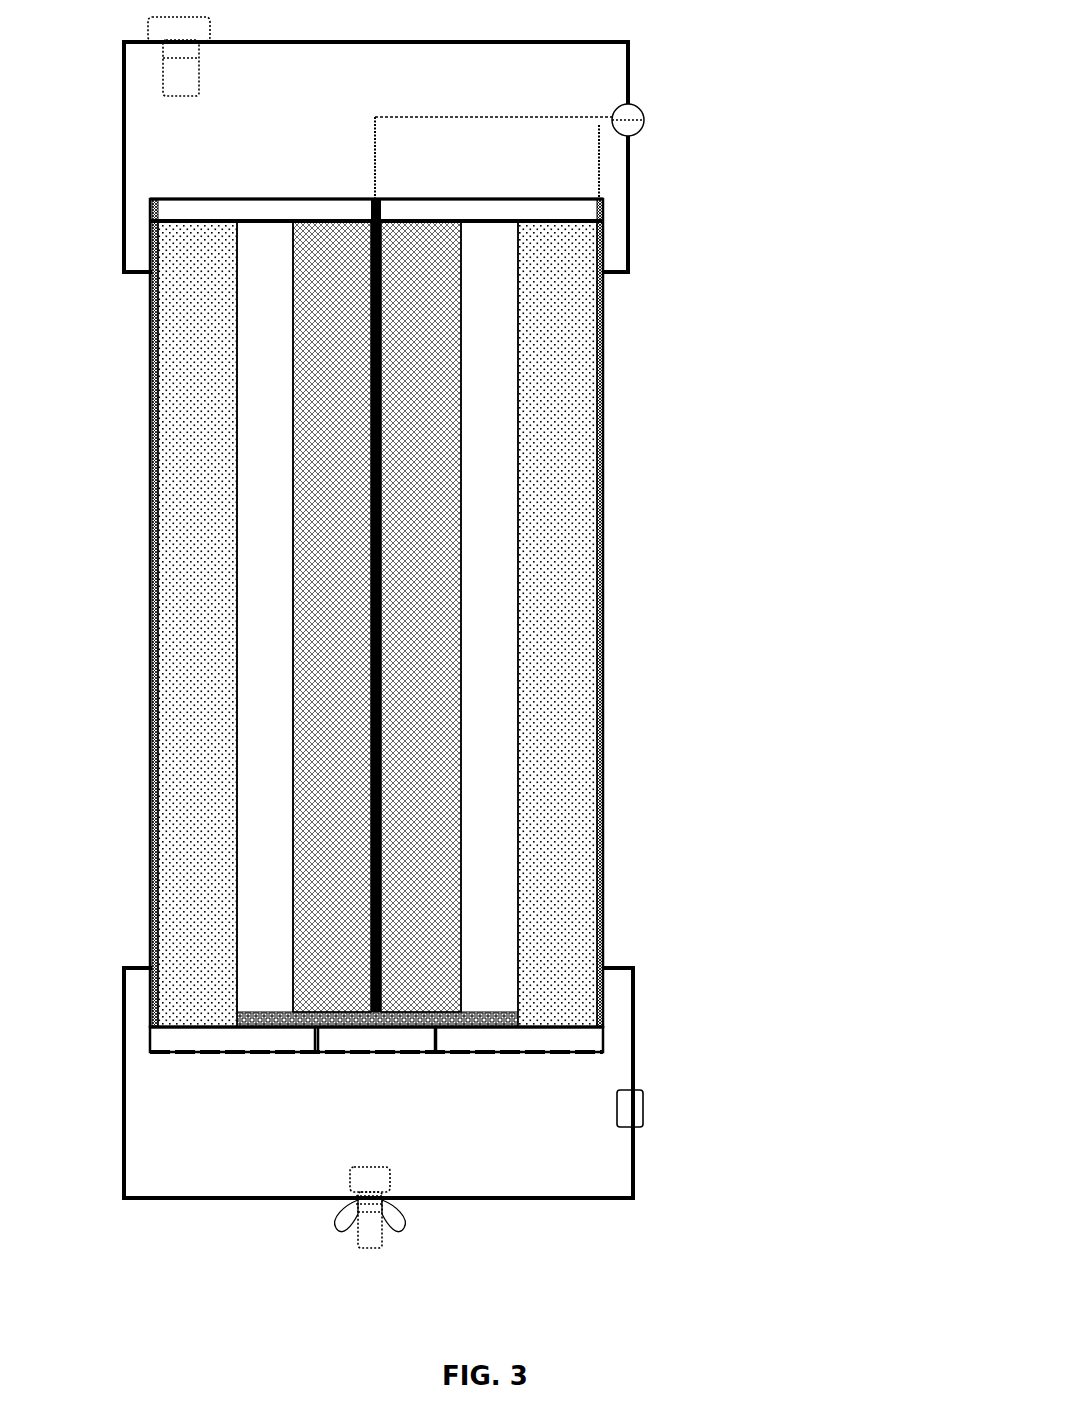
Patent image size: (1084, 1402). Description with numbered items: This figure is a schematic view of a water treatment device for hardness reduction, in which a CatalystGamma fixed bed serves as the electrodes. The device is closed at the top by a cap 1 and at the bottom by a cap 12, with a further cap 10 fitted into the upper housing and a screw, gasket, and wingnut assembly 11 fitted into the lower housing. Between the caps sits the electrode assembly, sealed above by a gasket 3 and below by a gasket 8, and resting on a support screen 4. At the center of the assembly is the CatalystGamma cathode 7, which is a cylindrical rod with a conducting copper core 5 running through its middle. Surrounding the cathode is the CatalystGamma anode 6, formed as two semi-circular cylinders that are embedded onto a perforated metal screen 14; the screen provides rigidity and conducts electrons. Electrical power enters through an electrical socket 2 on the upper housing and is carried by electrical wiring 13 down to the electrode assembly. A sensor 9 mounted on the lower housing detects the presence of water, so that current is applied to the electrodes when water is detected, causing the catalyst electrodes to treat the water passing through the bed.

The cap 1 is at (565, 54).
The electrical socket 2 is at (644, 122).
The gasket 3 is at (565, 206).
The support screen 4 is at (492, 1010).
The copper core 5 is at (381, 438).
The CatalystGamma anode 6 is at (560, 378).
The CatalystGamma cathode 7 is at (430, 552).
The gasket 8 is at (548, 1040).
The sensor 9 is at (643, 1104).
The cap 10 is at (165, 84).
The screw, gasket, and wingnut assembly 11 is at (372, 1167).
The cap 12 is at (565, 1190).
The electrical wiring 13 is at (563, 122).
The perforated metal screen 14 is at (603, 497).